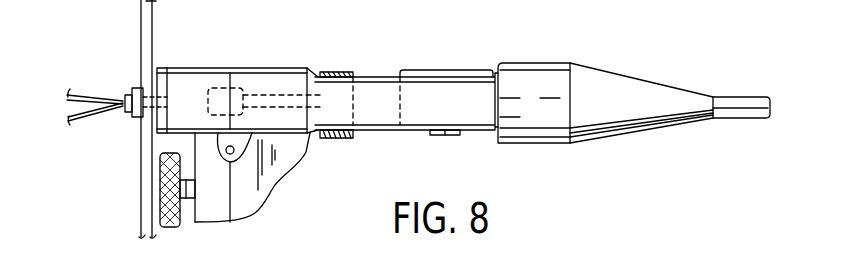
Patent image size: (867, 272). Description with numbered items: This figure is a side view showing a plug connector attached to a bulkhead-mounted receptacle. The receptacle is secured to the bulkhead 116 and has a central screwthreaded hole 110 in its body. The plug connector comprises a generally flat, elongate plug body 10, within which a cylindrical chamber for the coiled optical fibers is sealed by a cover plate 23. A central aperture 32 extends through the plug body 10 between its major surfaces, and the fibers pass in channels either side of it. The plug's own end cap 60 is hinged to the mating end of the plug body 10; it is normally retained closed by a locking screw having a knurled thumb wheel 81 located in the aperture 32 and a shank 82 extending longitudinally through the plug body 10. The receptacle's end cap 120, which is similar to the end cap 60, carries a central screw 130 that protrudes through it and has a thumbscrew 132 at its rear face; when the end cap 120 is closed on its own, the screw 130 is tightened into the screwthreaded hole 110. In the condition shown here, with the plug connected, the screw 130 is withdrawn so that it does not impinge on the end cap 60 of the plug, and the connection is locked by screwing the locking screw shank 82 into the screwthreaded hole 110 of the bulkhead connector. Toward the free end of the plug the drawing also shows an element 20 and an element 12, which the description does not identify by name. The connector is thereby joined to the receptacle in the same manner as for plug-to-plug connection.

The plug body 10 is at (382, 115).
The cord 12 is at (737, 93).
The cable end connector 20 is at (630, 73).
The cover plate 23 is at (463, 68).
The aperture 32 is at (398, 92).
The end cap 60 is at (283, 170).
The knurled thumb wheel 81 is at (333, 70).
The shank 82 is at (262, 95).
The central screwthreaded hole 110 is at (208, 90).
The bulkhead 116 is at (141, 32).
The end cap 120 is at (215, 222).
The central screw 130 is at (190, 202).
The thumbscrew 132 is at (173, 230).